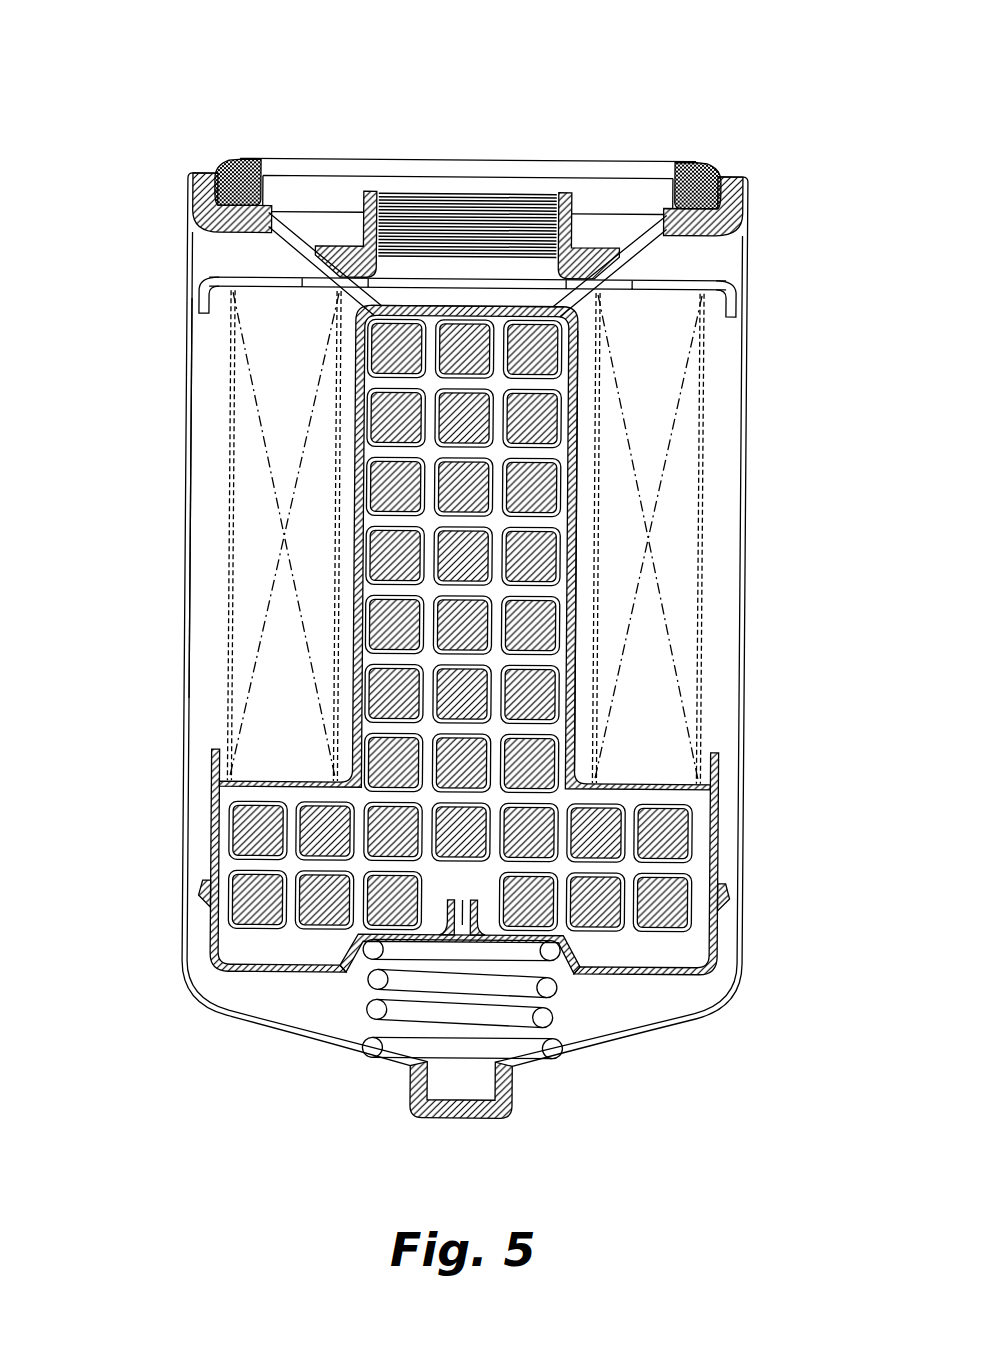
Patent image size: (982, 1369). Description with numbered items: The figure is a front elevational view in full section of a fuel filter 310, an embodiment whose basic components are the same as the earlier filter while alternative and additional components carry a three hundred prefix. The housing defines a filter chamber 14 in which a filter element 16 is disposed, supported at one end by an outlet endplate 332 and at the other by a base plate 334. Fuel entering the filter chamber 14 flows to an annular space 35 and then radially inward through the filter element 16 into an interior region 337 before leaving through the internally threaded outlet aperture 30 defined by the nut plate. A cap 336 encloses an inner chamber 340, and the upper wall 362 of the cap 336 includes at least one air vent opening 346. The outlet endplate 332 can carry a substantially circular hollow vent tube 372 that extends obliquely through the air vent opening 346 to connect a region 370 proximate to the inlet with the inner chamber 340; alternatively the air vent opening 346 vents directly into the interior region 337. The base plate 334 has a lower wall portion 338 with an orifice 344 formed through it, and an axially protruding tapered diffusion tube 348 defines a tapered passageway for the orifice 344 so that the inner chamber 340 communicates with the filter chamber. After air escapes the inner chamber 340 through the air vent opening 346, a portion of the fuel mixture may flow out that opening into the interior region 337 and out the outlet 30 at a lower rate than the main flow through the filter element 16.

The filter 310 is at (297, 104).
The filter chamber 14 is at (721, 266).
The internally threaded outlet aperture 30 is at (482, 272).
The region 370 is at (225, 249).
The annular space 35 is at (204, 494).
The vent tube 372 is at (351, 306).
The outlet endplate 332 is at (198, 286).
The air vent opening 346 is at (359, 329).
The interior region 337 is at (583, 322).
The filter element 16 is at (298, 409).
The inner chamber 340 is at (563, 521).
The cap 336 is at (577, 467).
The upper wall 362 is at (553, 303).
The base plate 334 is at (711, 960).
The lower wall portion 338 is at (632, 974).
The tapered diffusion tube 348 is at (369, 943).
The orifice 344 is at (458, 906).